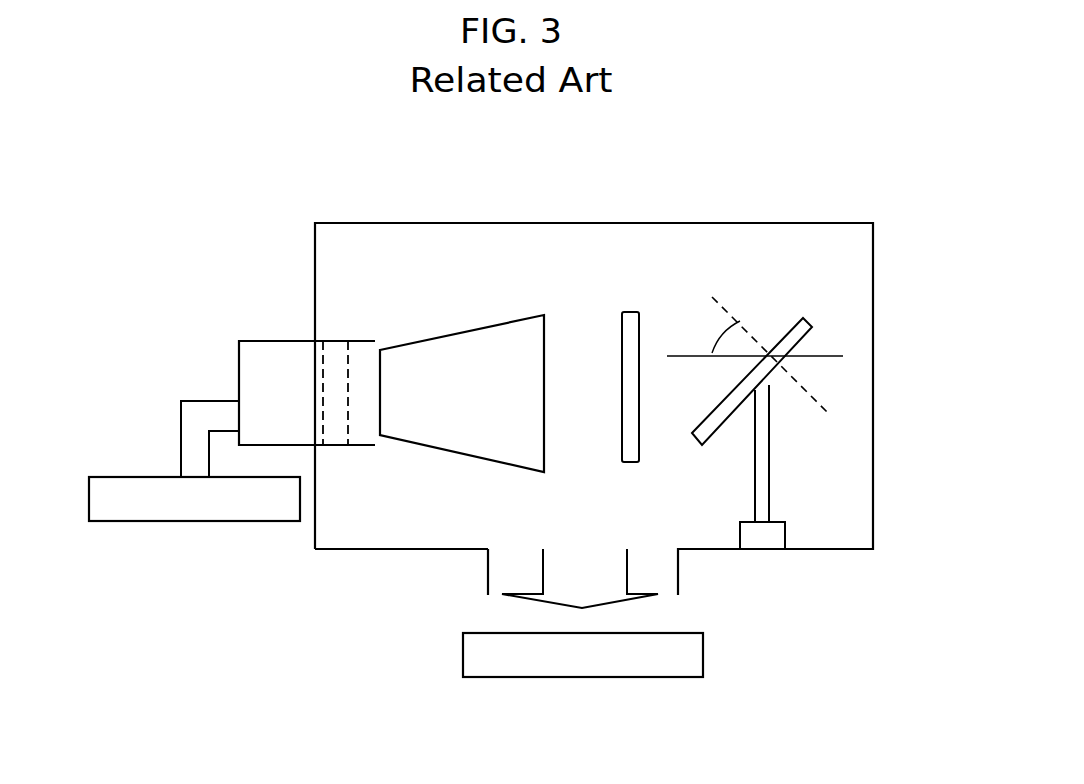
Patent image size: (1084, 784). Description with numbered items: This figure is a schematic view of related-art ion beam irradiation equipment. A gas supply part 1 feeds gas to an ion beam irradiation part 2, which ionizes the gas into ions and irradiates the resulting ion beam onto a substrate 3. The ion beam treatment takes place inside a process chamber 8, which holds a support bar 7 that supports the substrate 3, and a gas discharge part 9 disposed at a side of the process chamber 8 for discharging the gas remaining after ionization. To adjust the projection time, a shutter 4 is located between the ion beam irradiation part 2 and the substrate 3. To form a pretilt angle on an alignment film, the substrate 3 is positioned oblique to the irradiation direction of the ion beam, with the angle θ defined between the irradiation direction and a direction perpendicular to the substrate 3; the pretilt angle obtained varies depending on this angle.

The gas supply part 1 is at (192, 521).
The ion beam irradiation part 2 is at (262, 341).
The substrate 3 is at (808, 323).
The shutter 4 is at (632, 318).
The support bar 7 is at (762, 435).
The process chamber 8 is at (873, 490).
The gas discharge part 9 is at (703, 653).